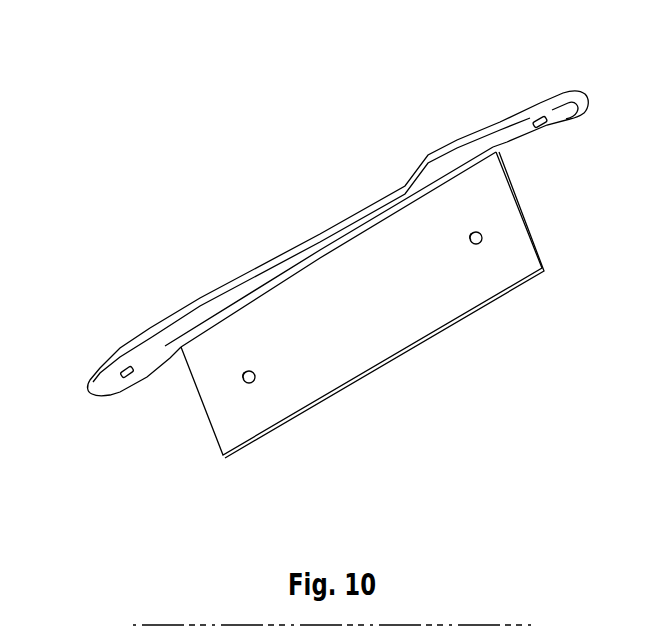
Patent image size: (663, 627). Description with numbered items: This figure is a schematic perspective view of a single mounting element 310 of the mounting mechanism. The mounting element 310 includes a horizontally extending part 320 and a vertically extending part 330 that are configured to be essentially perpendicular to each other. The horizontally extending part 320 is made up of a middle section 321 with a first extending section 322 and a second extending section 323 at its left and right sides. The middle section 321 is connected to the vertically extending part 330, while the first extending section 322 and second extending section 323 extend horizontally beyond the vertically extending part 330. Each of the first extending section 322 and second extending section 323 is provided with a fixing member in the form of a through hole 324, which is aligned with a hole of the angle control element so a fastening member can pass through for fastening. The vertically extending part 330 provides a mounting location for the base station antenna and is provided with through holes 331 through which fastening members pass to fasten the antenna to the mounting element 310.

The mounting element 310 is at (259, 121).
The horizontally extending part 320 is at (156, 345).
The middle section 321 is at (322, 237).
The first extending section 322 is at (117, 349).
The second extending section 323 is at (517, 113).
The through hole 324 is at (122, 381).
The vertically extending part 330 is at (426, 336).
The through hole 331 is at (252, 385).